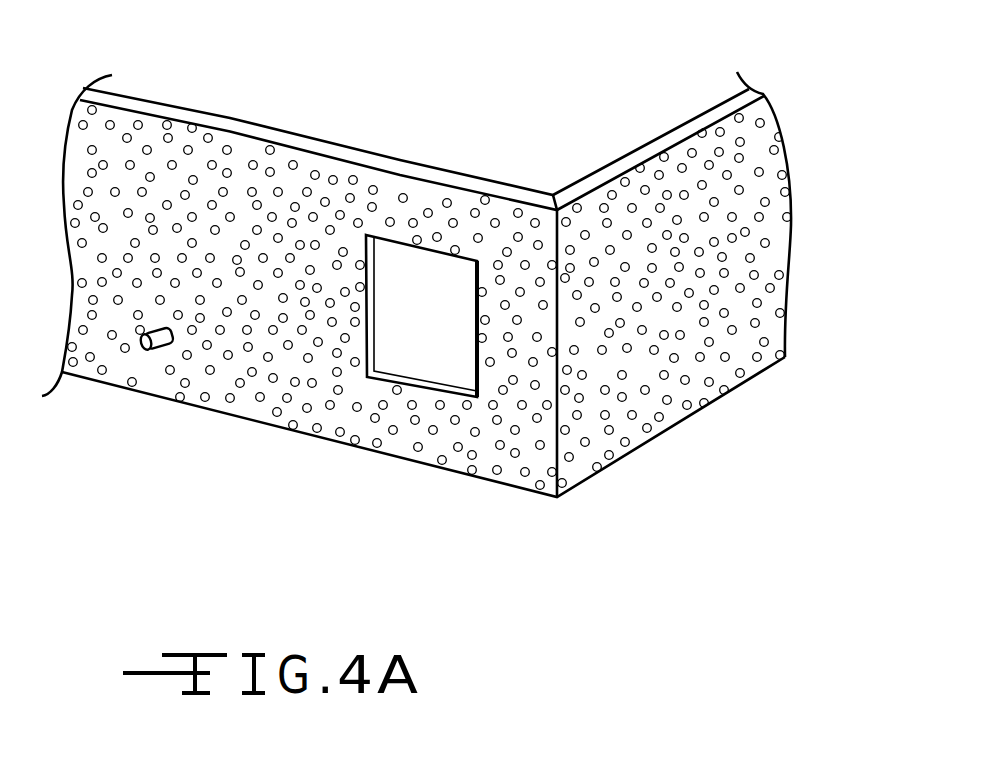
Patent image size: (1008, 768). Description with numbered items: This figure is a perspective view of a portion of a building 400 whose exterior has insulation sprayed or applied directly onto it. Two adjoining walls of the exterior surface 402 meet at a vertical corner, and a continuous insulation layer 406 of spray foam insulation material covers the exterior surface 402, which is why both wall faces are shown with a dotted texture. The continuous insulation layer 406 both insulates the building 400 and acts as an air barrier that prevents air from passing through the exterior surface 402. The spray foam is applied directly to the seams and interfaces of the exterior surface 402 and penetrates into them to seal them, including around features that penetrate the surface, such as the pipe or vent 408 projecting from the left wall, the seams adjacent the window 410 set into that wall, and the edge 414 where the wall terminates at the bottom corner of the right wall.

The building 400 is at (463, 310).
The exterior surface 402 is at (492, 458).
The continuous insulation layer 406 is at (280, 166).
The pipe or vent 408 is at (155, 350).
The window 410 is at (397, 355).
The edge 414 is at (573, 518).